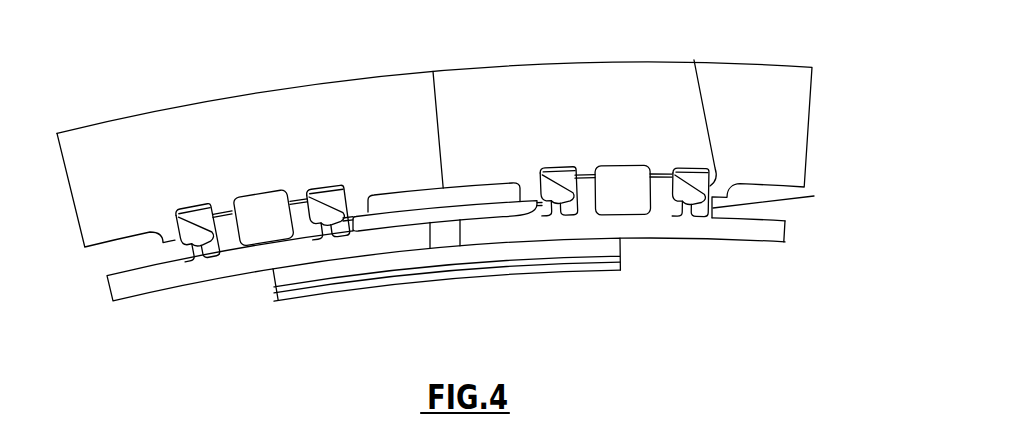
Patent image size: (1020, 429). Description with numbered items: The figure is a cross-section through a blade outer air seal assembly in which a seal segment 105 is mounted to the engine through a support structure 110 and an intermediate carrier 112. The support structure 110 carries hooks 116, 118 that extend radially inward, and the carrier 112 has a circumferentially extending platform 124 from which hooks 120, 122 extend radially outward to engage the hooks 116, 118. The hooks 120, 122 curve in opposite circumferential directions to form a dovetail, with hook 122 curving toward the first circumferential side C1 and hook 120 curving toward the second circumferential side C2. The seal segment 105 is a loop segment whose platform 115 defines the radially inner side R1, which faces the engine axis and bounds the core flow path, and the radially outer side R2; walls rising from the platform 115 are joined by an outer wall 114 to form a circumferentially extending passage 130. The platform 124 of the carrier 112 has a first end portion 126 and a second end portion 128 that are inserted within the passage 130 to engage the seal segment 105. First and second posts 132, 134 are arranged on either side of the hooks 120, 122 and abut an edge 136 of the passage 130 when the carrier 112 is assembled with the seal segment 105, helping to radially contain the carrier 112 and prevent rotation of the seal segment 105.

The seal segment 105 is at (614, 271).
The support structure 110 is at (783, 84).
The intermediate carrier 112 is at (770, 232).
The outer wall 114 is at (410, 222).
The platform 115 is at (554, 265).
The hook 116 is at (538, 193).
The hook 118 is at (694, 60).
The hook 120 is at (556, 178).
The hook 122 is at (692, 173).
The platform 124 is at (703, 233).
The first end portion 126 is at (473, 243).
The second end portion 128 is at (774, 240).
The passage 130 is at (445, 238).
The first post 132 is at (533, 195).
The second post 134 is at (785, 195).
The edge 136 is at (516, 204).
The first circumferential side C1 is at (622, 252).
The second circumferential side C2 is at (273, 281).
The radially inner side R1 is at (363, 293).
The radially outer side R2 is at (344, 262).